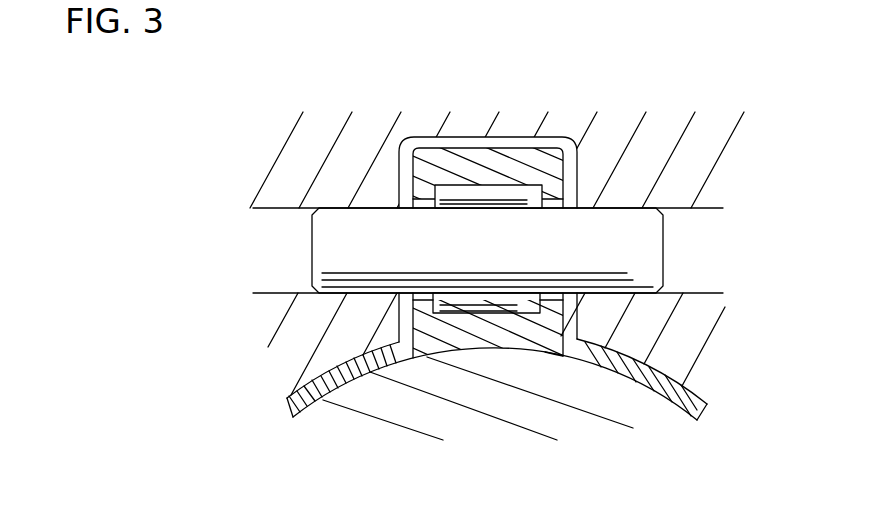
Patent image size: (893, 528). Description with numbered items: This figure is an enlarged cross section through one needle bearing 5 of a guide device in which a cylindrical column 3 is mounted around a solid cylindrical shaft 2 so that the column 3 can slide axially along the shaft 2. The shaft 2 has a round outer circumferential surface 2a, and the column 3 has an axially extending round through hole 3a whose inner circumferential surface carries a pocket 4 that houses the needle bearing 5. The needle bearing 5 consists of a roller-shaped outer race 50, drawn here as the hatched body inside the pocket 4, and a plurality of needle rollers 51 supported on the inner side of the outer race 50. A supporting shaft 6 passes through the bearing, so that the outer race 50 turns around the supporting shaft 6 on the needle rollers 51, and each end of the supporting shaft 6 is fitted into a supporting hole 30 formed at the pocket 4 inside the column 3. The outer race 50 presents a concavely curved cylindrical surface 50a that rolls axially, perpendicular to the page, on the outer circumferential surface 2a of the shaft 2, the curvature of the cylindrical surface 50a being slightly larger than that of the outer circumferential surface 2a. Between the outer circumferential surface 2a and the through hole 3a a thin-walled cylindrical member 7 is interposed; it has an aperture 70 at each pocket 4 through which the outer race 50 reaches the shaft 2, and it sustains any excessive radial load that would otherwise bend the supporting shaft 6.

The shaft 2 is at (370, 407).
The outer circumferential surface 2a is at (692, 416).
The column 3 is at (293, 150).
The through hole 3a is at (287, 404).
The pocket 4 is at (505, 209).
The needle bearing 5 is at (428, 139).
The supporting shaft 6 is at (653, 247).
The cylindrical member 7 is at (660, 381).
The supporting hole 30 is at (723, 207).
The outer race 50 is at (467, 157).
The cylindrical surface 50a is at (490, 350).
The needle roller 51 is at (517, 192).
The aperture 70 is at (558, 355).